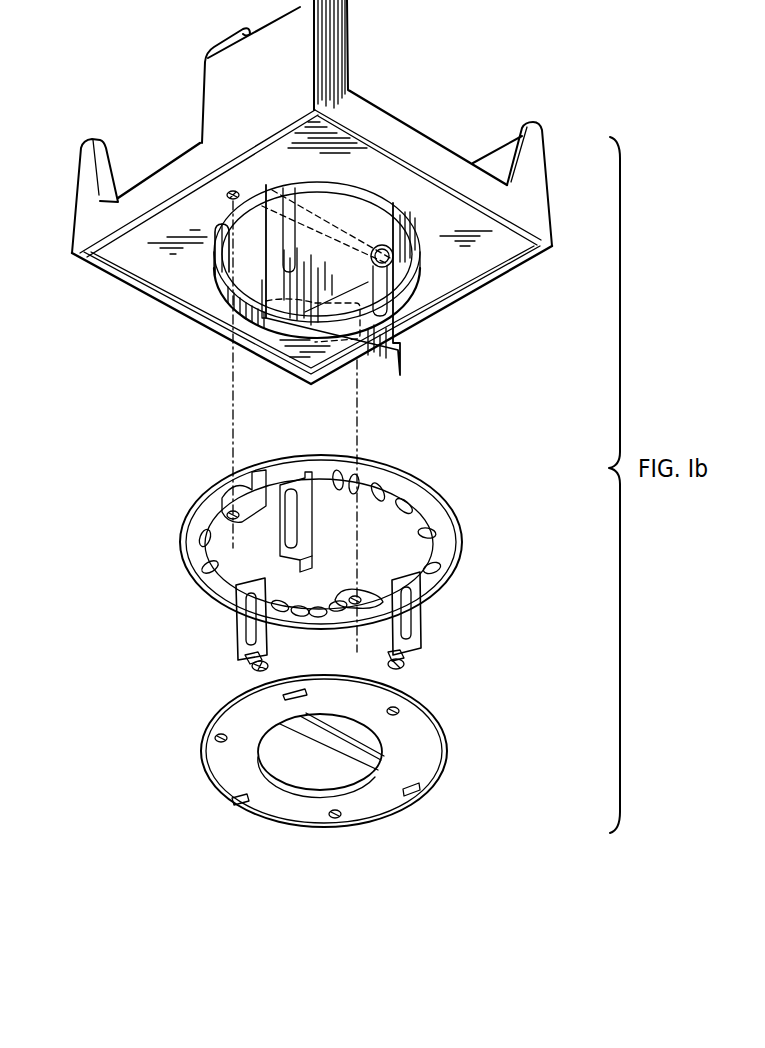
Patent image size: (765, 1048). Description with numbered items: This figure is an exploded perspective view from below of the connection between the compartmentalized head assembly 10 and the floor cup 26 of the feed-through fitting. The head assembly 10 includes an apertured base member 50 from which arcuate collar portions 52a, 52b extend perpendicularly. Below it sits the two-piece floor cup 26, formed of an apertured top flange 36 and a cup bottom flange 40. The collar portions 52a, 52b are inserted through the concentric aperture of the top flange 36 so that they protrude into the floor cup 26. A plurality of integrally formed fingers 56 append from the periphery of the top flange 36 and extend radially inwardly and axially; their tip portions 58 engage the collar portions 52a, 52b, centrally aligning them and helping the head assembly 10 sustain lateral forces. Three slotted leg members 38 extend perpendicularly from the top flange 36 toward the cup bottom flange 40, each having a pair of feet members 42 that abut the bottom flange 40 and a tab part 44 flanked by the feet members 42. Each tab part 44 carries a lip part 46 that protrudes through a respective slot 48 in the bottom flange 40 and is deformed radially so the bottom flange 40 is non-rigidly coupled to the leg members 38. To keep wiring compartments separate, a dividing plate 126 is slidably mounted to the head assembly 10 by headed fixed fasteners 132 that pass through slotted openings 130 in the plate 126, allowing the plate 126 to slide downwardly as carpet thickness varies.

The compartmentalized head assembly 10 is at (403, 95).
The apertured base member 50 is at (138, 257).
The arcuate collar portion 52a is at (410, 216).
The arcuate collar portion 52b is at (216, 268).
The dividing plate 126 is at (398, 360).
The slotted openings 130 is at (298, 250).
The headed fixed fasteners 132 is at (396, 262).
The floor cup 26 is at (153, 553).
The apertured top flange 36 is at (431, 488).
The fingers 56 is at (370, 480).
The tip portions 58 is at (342, 477).
The leg members 38 is at (235, 630).
The feet members 42 is at (416, 657).
The tab part 44 is at (256, 662).
The lip part 46 is at (265, 656).
The cup bottom flange 40 is at (434, 727).
The slot 48 is at (233, 798).